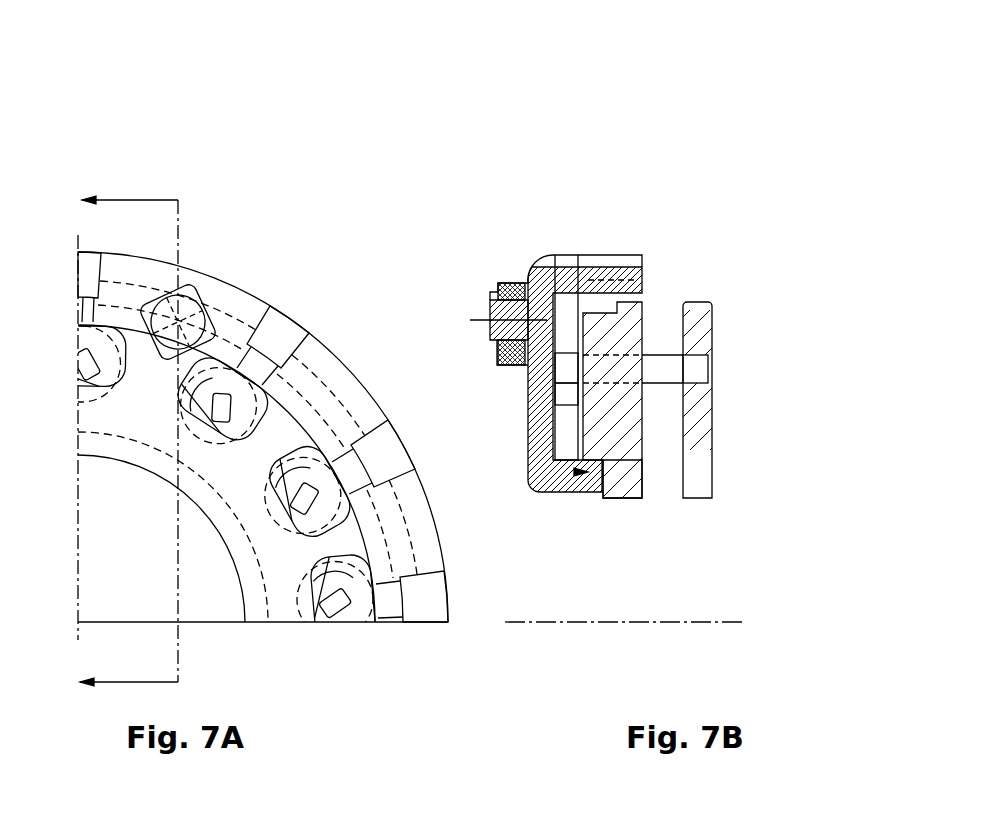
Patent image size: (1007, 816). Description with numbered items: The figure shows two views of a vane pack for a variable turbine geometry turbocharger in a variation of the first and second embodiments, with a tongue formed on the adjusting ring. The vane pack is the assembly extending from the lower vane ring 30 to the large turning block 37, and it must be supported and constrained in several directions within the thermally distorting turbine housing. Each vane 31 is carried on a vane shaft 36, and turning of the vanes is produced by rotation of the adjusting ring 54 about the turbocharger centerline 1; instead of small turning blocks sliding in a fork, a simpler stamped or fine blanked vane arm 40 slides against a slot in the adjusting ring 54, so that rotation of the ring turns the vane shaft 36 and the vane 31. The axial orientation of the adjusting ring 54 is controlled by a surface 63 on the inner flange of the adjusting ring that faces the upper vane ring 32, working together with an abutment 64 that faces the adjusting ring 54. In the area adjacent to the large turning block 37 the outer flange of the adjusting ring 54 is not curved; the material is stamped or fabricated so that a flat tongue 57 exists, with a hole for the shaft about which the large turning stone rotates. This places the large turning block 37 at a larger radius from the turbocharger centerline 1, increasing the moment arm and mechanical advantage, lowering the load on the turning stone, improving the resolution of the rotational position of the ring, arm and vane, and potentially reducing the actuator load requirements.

In FIG. 7B, the turbocharger centerline 1 is at (720, 622).
In FIG. 7B, the lower vane ring 30 is at (712, 480).
In FIG. 7B, the vane 31 is at (704, 300).
In FIG. 7B, the upper vane ring 32 is at (643, 350).
In FIG. 7B, the vane shaft 36 is at (690, 318).
In FIG. 7A, the large turning block 37 is at (203, 330).
In FIG. 7B, the large turning block 37 is at (497, 283).
In FIG. 7B, the vane arm 40 is at (569, 300).
In FIG. 7B, the adjusting ring 54 is at (600, 263).
In FIG. 7A, the flat tongue 57 is at (103, 270).
In FIG. 7A, the upper-vane-ring facing surface 63 is at (580, 471).
In FIG. 7B, the upper-vane-ring facing surface 63 is at (585, 379).
In FIG. 7B, the abutment 64 is at (615, 473).